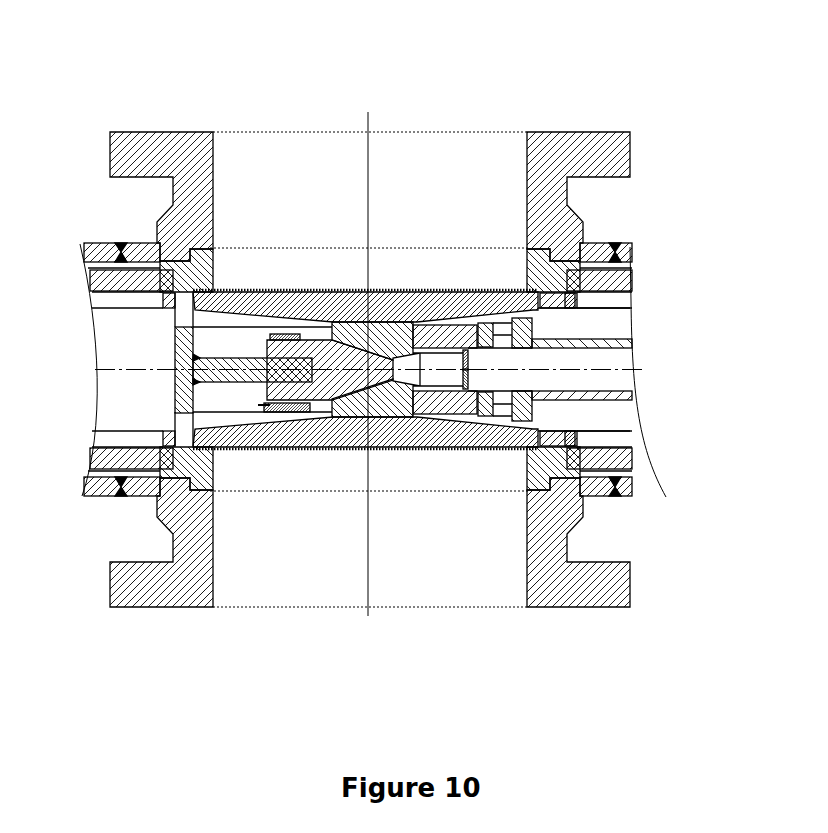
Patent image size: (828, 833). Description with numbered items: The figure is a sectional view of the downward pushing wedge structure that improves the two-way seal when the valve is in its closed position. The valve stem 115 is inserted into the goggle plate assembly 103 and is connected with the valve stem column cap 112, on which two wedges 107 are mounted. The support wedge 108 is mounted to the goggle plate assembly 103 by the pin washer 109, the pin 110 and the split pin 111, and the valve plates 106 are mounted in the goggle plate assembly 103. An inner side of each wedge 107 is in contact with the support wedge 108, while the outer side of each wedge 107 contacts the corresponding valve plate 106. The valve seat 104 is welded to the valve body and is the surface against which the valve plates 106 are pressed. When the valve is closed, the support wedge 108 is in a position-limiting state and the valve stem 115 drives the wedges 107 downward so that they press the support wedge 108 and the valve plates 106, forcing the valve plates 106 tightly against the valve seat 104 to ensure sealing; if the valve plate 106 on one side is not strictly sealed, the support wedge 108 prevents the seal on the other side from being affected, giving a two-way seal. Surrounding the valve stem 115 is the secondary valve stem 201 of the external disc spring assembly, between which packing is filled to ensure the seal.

The goggle plate assembly 103 is at (181, 262).
The valve seat 104 is at (538, 455).
The valve plates 106 is at (280, 452).
The wedges 107 is at (397, 330).
The support wedge 108 is at (340, 384).
The pin washer 109 is at (273, 337).
The pin 110 is at (291, 337).
The split pin 111 is at (303, 412).
The valve stem column cap 112 is at (443, 397).
The valve stem 115 is at (505, 362).
The secondary valve stem 201 is at (553, 338).